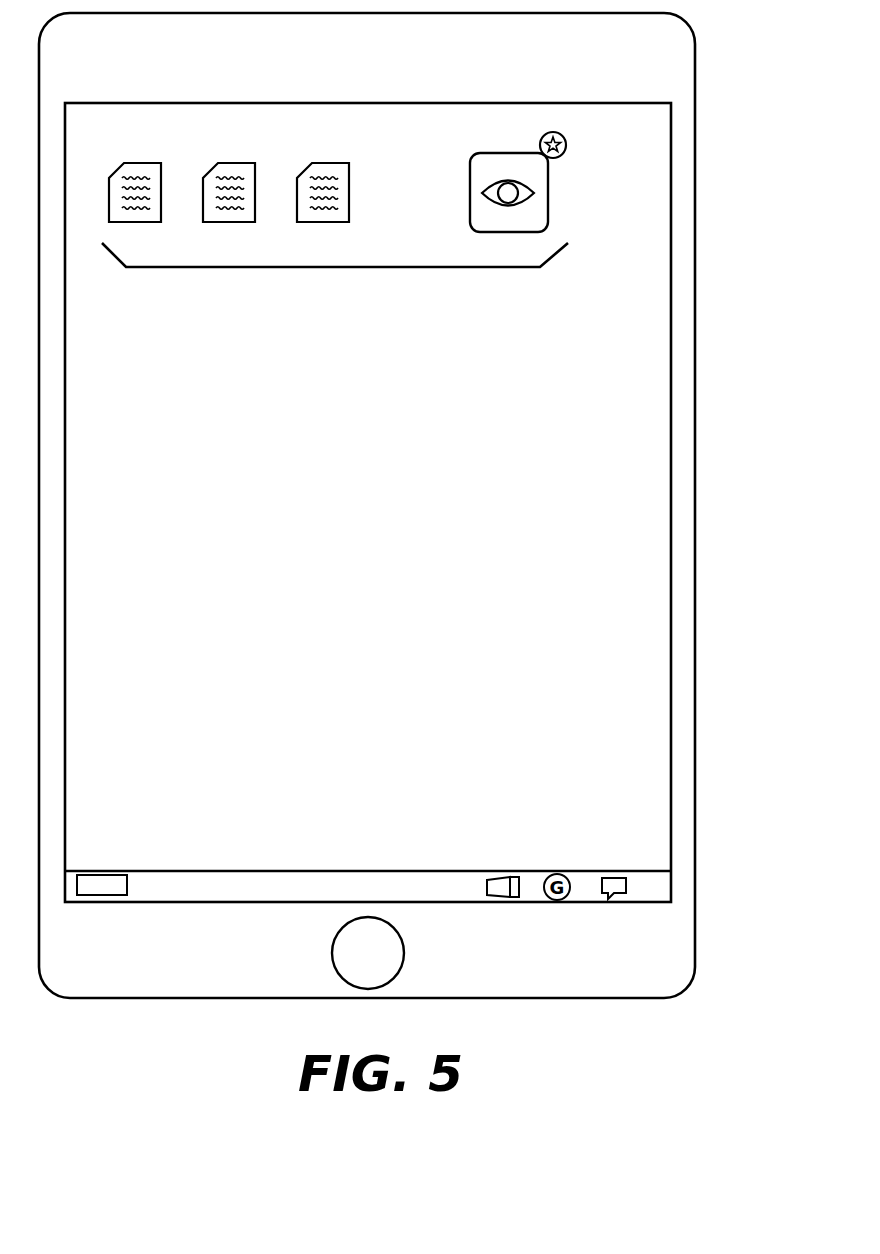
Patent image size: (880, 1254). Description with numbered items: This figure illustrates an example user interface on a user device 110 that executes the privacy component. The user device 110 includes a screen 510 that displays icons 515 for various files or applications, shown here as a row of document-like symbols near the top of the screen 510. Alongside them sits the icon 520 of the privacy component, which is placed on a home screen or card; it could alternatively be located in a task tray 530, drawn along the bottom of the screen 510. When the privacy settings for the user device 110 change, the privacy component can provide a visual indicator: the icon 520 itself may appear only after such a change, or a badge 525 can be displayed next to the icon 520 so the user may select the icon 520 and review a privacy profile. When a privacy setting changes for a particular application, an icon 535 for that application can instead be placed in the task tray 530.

The user device 110 is at (695, 143).
The screen 510 is at (384, 513).
The icons 515 is at (340, 267).
The icon 520 is at (548, 195).
The badge 525 is at (566, 145).
The task tray 530 is at (654, 888).
The icon 535 is at (493, 873).